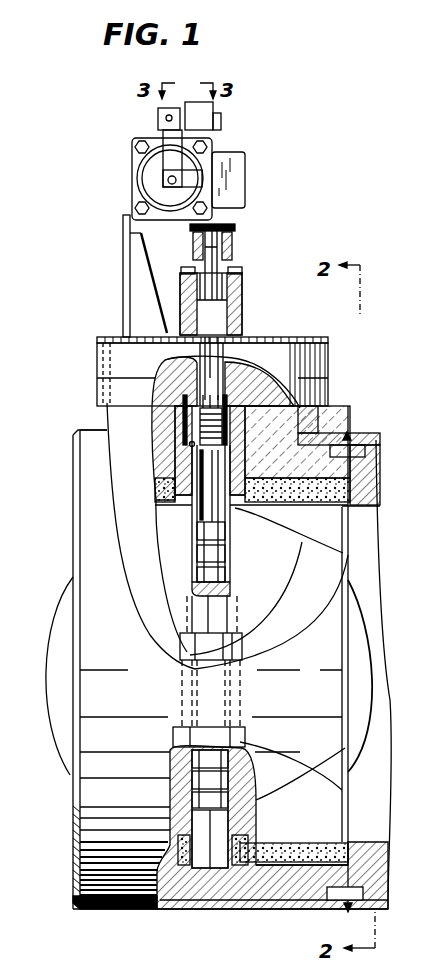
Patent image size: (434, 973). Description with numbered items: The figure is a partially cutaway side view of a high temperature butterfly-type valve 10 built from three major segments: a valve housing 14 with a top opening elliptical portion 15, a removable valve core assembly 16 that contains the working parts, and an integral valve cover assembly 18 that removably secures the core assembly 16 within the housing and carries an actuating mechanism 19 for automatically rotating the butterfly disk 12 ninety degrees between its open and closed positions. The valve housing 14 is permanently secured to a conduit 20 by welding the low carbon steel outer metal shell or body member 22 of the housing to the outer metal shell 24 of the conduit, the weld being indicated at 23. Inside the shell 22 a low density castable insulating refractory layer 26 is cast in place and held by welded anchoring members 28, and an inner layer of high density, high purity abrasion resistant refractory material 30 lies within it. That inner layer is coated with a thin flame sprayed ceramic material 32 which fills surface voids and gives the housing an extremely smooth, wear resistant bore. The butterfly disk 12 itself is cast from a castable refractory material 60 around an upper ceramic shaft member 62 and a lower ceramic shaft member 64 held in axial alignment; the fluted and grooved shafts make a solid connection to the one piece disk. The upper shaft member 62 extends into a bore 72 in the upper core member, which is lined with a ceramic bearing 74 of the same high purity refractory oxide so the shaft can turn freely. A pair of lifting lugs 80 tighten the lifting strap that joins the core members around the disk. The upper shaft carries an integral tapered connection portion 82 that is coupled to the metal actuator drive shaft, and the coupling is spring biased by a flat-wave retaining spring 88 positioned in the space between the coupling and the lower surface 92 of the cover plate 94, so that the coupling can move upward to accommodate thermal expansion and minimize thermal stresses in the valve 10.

The valve 10 is at (259, 268).
The butterfly disk 12 is at (65, 615).
The valve housing 14 is at (96, 495).
The top opening elliptical portion 15 is at (117, 428).
The valve core assembly 16 is at (270, 337).
The valve cover assembly 18 is at (140, 283).
The actuating mechanism 19 is at (232, 156).
The conduit 20 is at (384, 449).
The outer metal shell or body member 22 is at (319, 433).
The weld 23 is at (350, 434).
The outer metal shell of conduit 24 is at (372, 438).
The insulating refractory layer 26 is at (285, 393).
The anchoring members 28 is at (293, 378).
The abrasion resistant refractory material 30 is at (338, 488).
The flame sprayed ceramic material 32 is at (346, 527).
The castable refractory material 60 is at (242, 560).
The upper ceramic shaft member 62 is at (213, 510).
The lower ceramic shaft member 64 is at (245, 793).
The bore 72 is at (189, 444).
The ceramic bearing 74 is at (297, 442).
The lifting lugs 80 is at (433, 73).
The tapered connection portion 82 is at (223, 425).
The flat-wave retaining spring 88 is at (248, 337).
The lower surface of cover plate 92 is at (167, 360).
The cover plate 94 is at (302, 370).